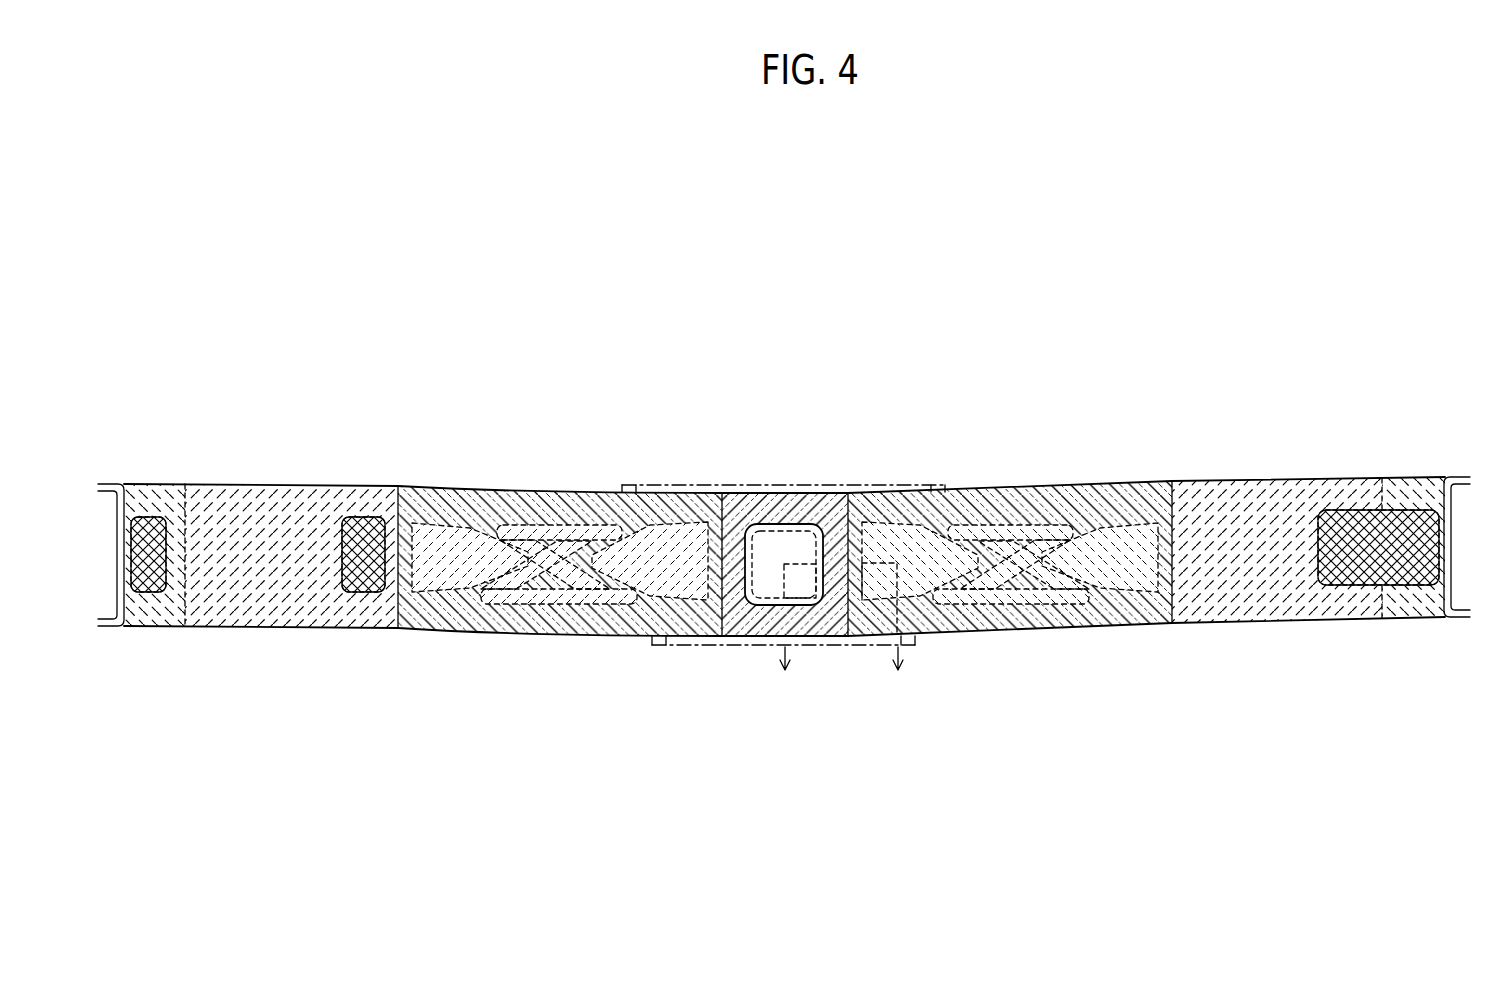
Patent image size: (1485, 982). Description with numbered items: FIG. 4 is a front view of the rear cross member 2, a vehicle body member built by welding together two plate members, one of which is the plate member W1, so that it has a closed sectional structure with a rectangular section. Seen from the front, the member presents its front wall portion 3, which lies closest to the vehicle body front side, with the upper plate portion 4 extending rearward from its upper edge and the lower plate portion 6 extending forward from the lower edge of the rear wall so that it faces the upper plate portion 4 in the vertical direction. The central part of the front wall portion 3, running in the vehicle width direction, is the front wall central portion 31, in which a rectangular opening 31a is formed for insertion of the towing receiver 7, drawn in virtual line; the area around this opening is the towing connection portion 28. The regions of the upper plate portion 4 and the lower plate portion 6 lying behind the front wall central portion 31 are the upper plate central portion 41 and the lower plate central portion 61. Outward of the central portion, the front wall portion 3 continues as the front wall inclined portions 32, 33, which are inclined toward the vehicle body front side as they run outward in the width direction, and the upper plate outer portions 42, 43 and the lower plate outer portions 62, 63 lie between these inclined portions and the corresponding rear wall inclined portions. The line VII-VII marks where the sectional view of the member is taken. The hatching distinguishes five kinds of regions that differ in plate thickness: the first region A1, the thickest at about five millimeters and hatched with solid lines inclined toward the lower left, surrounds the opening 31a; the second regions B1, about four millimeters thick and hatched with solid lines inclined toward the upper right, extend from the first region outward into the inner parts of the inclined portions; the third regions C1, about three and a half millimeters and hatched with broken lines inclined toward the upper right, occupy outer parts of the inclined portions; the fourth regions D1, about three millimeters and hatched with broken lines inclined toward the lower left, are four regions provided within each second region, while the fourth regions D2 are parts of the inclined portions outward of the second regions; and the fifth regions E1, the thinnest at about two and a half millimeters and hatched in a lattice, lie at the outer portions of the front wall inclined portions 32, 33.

The rear cross member 2 is at (425, 363).
The front wall portion 3 is at (558, 520).
The front wall central portion 31 is at (637, 606).
The rectangular opening 31a is at (762, 599).
The towing connection portion 28 is at (770, 526).
The towing receiver 7 is at (808, 486).
The line VII- VII is at (841, 677).
The upper plate portion 4 is at (958, 490).
The upper plate central portion 41 is at (876, 492).
The upper plate outer portion 42 is at (1285, 482).
The upper plate outer portion 43 is at (245, 486).
The lower plate portion 6 is at (1082, 635).
The lower plate central portion 61 is at (865, 640).
The lower plate outer portion 62 is at (1352, 621).
The lower plate outer portion 63 is at (220, 628).
The front wall inclined portion 32 is at (1290, 603).
The front wall inclined portion 33 is at (263, 612).
The third region C1 is at (152, 498).
The plate member W1 is at (345, 483).
The second region B1 is at (482, 512).
The fourth region D1 is at (651, 527).
The fourth region D2 is at (323, 603).
The first region A1 is at (737, 527).
The fifth region E1 is at (1365, 535).